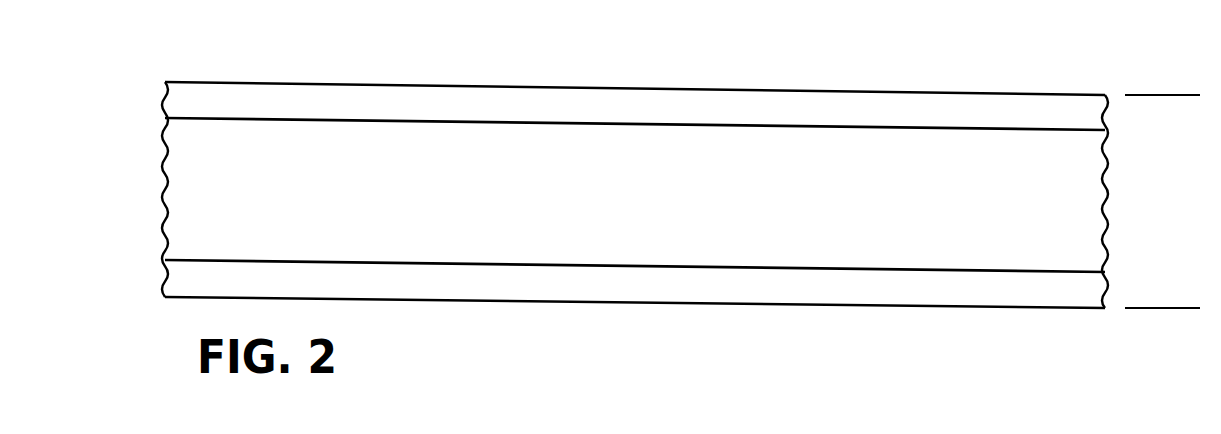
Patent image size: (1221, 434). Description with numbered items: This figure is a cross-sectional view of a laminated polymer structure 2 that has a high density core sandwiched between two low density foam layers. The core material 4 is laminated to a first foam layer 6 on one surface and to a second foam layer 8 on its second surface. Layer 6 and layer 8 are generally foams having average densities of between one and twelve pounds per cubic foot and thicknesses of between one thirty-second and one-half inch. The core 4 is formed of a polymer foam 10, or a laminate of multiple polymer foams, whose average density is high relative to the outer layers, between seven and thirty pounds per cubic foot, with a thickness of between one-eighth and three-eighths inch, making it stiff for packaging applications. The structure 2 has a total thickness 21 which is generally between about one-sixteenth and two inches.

The laminated polymer structure 2 is at (263, 83).
The core material 4 is at (133, 118).
The first foam layer 6 is at (527, 105).
The second foam layer 8 is at (466, 285).
The polymer foam 10 is at (718, 240).
The total thickness 21 is at (1165, 95).